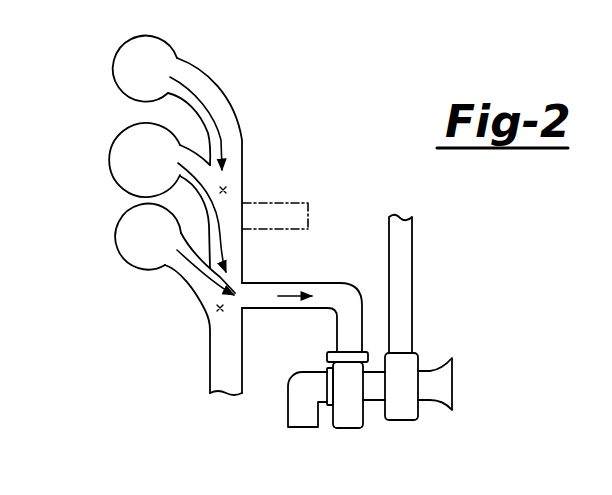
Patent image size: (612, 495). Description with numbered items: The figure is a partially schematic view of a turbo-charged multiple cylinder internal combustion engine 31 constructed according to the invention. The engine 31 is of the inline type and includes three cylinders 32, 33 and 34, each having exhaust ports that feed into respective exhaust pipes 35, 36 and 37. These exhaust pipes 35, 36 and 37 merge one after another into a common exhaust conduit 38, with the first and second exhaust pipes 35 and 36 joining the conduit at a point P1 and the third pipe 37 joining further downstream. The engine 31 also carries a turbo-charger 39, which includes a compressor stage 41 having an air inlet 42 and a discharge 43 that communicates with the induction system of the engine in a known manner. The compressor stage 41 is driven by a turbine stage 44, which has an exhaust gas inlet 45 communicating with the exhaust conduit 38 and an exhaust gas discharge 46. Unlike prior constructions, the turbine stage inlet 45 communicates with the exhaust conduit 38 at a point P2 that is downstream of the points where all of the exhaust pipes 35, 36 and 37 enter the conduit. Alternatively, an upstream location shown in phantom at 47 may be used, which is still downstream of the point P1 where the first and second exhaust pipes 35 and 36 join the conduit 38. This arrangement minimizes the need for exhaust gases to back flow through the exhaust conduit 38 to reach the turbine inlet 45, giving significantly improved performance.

The turbo-charged multiple cylinder internal combustion engine 31 is at (347, 98).
The cylinder 32 is at (114, 65).
The cylinder 33 is at (114, 147).
The cylinder 34 is at (114, 235).
The exhaust pipe 35 is at (197, 82).
The exhaust pipe 36 is at (182, 175).
The exhaust pipe 37 is at (175, 266).
The common exhaust conduit 38 is at (243, 257).
The turbo-charger 39 is at (445, 324).
The compressor stage 41 is at (420, 417).
The air inlet 42 is at (433, 362).
The discharge 43 is at (407, 247).
The turbine stage 44 is at (340, 382).
The exhaust gas inlet 45 is at (253, 295).
The exhaust gas discharge 46 is at (318, 427).
The upstream location 47 is at (277, 215).
The point P1 is at (227, 187).
The point P2 is at (216, 309).